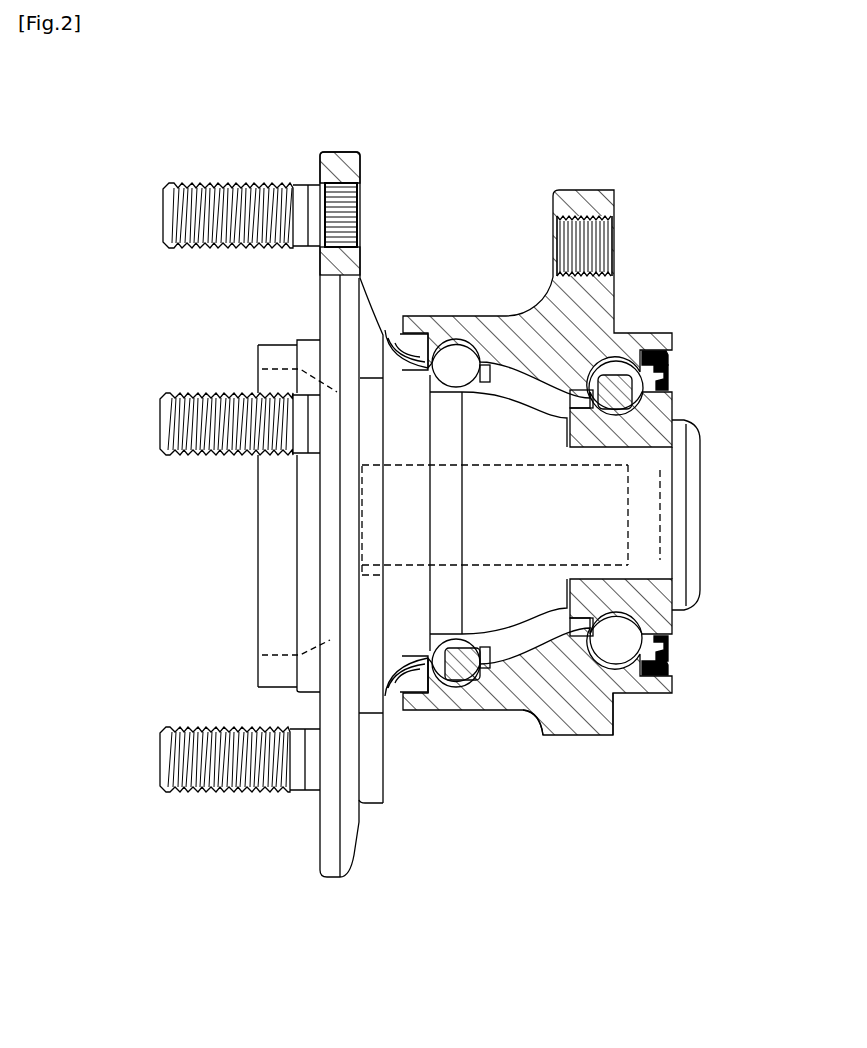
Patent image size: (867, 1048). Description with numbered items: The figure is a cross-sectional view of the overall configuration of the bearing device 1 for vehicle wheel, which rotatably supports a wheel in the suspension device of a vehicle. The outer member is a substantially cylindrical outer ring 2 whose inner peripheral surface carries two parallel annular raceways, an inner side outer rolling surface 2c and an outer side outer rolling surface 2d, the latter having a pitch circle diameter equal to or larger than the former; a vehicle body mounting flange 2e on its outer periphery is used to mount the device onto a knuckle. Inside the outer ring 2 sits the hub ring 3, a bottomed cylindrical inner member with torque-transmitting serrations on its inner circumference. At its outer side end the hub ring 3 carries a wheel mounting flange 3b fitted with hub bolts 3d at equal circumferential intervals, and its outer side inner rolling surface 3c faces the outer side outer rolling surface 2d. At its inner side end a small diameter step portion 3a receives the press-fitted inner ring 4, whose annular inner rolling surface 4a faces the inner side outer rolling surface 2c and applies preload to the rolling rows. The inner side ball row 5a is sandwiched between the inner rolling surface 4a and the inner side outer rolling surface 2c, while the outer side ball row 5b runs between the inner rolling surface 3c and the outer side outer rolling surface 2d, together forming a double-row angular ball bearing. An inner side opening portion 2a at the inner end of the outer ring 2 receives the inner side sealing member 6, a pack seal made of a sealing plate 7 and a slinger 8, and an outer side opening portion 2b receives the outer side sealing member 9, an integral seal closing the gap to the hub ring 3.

The bearing device for vehicle wheel 1 is at (91, 112).
The outer ring 2 is at (623, 151).
The inner side opening portion 2a is at (637, 697).
The outer side opening portion 2b is at (433, 693).
The inner side outer rolling surface 2c is at (556, 717).
The outer side outer rolling surface 2d is at (458, 690).
The vehicle body mounting flange 2e is at (580, 188).
The hub ring 3 is at (380, 130).
The small diameter step portion 3a is at (690, 450).
The wheel mounting flange 3b is at (345, 160).
The outer side inner rolling surface 3c is at (430, 400).
The hub bolt 3d is at (252, 184).
The inner ring 4 is at (675, 618).
The inner rolling surface 4a is at (610, 620).
The inner side ball row 5a is at (620, 356).
The outer side ball row 5b is at (458, 340).
The inner side sealing member 6 is at (718, 338).
The sealing plate 7 is at (668, 356).
The slinger 8 is at (668, 382).
The outer side sealing member 9 is at (405, 296).